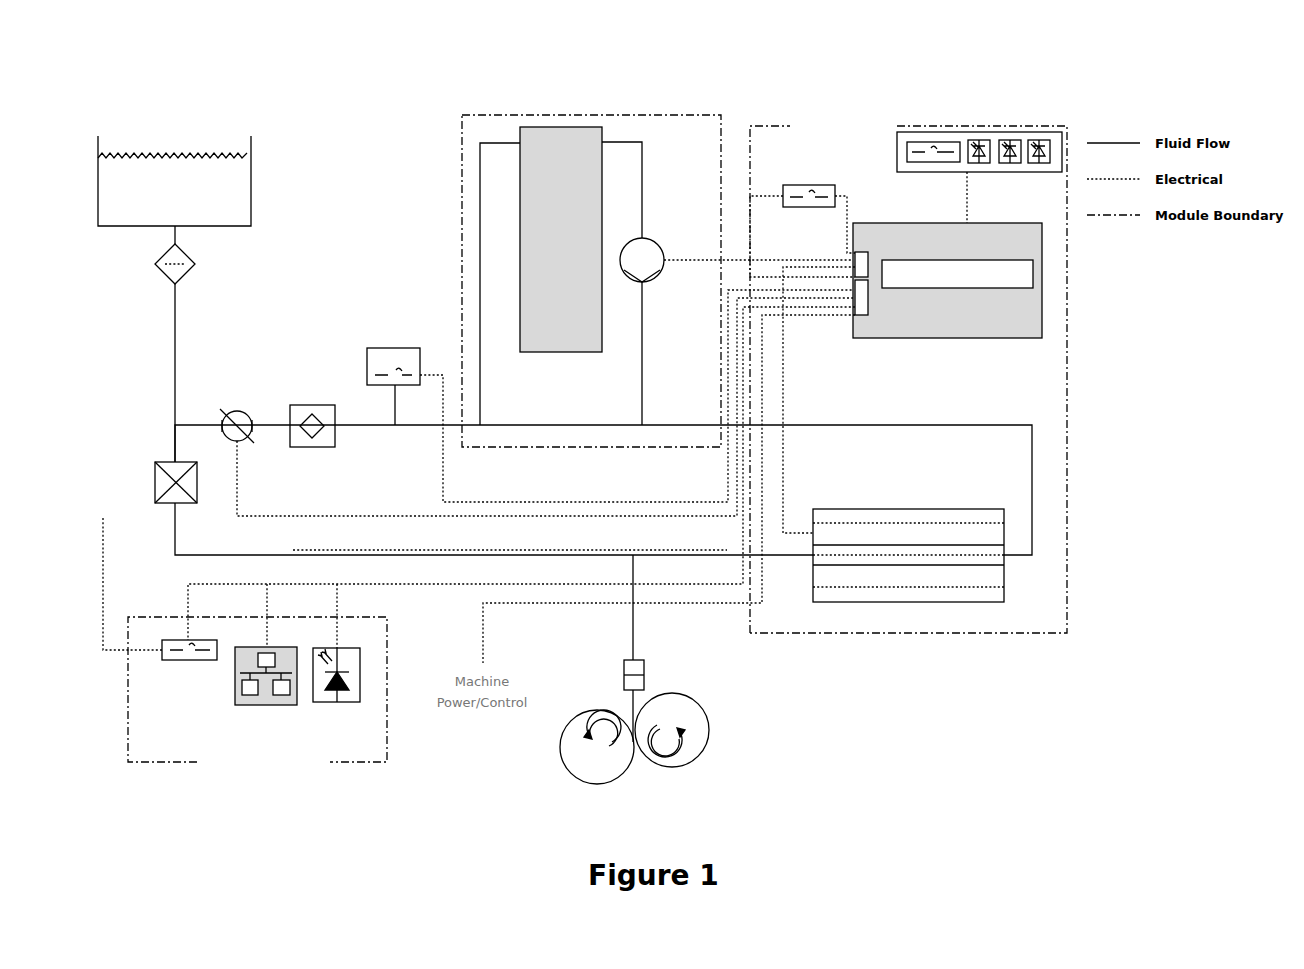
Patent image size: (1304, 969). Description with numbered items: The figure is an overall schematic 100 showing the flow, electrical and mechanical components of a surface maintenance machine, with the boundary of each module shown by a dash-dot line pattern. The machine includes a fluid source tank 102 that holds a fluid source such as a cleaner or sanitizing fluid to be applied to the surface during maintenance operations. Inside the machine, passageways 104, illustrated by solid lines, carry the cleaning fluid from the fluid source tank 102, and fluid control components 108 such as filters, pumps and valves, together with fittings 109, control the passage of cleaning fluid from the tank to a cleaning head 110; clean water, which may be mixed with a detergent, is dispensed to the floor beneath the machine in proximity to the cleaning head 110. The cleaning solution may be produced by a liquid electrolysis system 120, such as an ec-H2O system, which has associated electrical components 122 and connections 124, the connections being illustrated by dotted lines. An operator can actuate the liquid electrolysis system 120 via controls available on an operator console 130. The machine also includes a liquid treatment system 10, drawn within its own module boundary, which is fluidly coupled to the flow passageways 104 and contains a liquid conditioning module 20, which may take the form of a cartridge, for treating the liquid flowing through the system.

The overall schematic 100 is at (892, 52).
The liquid treatment system 10 is at (640, 98).
The liquid conditioning module 20 is at (598, 213).
The fluid source tank 102 is at (255, 173).
The passageways 104 is at (175, 376).
The fluid control components 108 is at (254, 398).
The fittings 109 is at (646, 667).
The cleaning head 110 is at (710, 723).
The liquid electrolysis system 120 is at (1067, 536).
The electrical components 122 is at (1030, 316).
The connections 124 is at (313, 513).
The operator console 130 is at (385, 760).